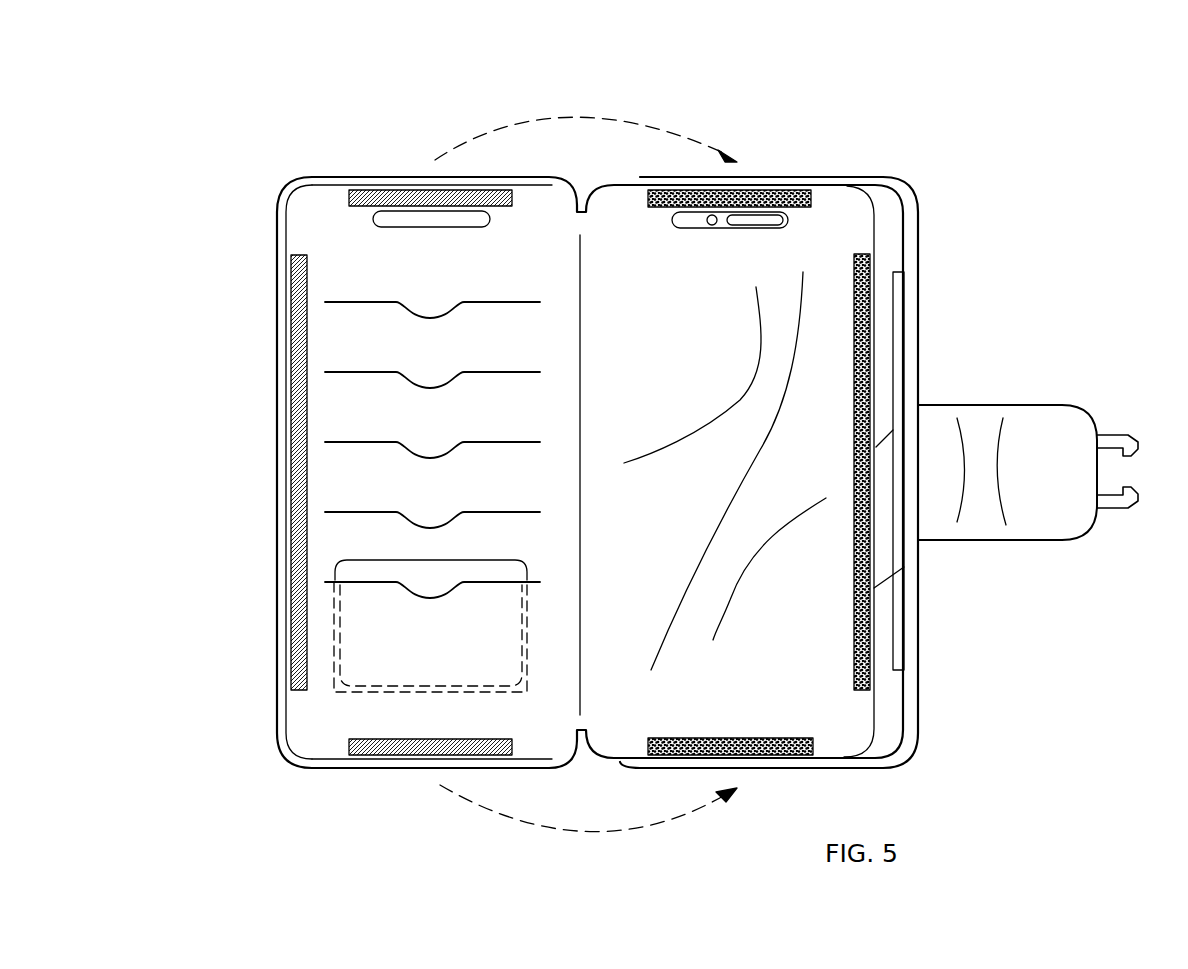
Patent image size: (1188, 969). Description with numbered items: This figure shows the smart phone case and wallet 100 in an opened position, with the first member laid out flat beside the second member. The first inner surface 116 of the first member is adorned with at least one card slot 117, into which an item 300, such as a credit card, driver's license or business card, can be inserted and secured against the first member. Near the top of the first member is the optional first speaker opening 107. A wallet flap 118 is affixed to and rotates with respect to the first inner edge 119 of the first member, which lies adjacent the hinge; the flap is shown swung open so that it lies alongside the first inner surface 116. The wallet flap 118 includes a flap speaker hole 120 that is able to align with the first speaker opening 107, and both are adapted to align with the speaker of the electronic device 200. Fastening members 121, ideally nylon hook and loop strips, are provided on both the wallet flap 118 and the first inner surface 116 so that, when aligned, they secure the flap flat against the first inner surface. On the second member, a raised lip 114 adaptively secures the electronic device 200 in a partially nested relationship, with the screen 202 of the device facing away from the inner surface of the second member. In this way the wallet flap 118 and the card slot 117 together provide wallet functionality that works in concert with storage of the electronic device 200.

The smart phone case and wallet 100 is at (1062, 198).
The first speaker opening 107 is at (408, 213).
The raised lip 114 is at (902, 350).
The first inner surface 116 is at (519, 258).
The card slot 117 is at (343, 302).
The wallet flap 118 is at (847, 215).
The first inner edge 119 is at (580, 288).
The flap speaker hole 120 is at (753, 193).
The fastening members 121 is at (297, 442).
The electronic device 200 is at (885, 218).
The screen 202 is at (883, 285).
The item 300 is at (358, 558).